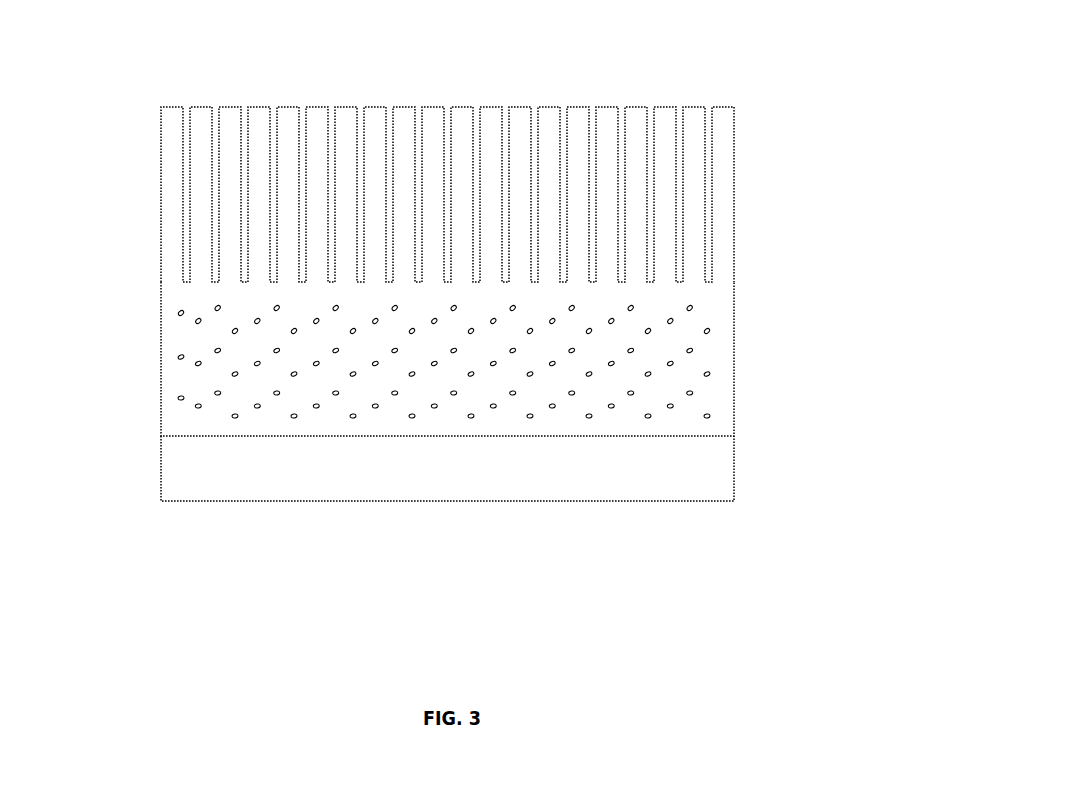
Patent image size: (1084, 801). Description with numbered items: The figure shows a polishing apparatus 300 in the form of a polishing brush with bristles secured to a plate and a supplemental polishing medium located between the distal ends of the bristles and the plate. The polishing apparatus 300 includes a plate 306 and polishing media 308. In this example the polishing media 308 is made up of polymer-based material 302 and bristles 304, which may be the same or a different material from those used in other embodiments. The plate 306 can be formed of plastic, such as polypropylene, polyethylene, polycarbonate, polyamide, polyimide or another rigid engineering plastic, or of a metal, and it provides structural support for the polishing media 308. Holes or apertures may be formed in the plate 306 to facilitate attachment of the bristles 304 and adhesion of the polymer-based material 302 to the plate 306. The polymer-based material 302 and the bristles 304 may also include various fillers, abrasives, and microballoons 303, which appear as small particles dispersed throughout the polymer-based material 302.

The polishing apparatus 300 is at (704, 53).
The polymer-based material 302 is at (728, 382).
The microballoons 303 is at (707, 330).
The bristles 304 is at (728, 220).
The plate 306 is at (728, 470).
The polishing media 308 is at (141, 107).